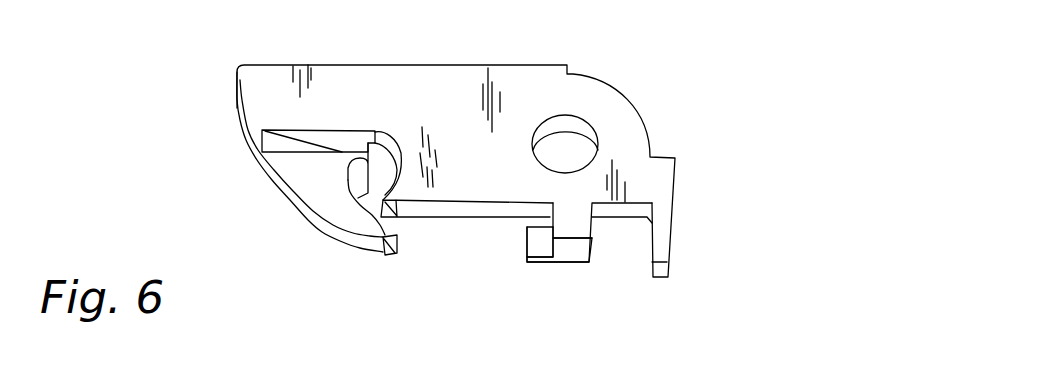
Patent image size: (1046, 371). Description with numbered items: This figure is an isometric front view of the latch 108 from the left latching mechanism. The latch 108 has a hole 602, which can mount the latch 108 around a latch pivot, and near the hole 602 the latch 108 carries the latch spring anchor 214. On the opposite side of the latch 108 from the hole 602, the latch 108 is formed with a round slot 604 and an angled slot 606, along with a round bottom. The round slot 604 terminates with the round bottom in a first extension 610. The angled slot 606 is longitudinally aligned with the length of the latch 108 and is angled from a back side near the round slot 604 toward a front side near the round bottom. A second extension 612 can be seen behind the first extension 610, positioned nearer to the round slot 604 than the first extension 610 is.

The latch 108 is at (655, 47).
The hole 602 is at (601, 130).
The angled slot 606 is at (262, 139).
The round slot 604 is at (357, 180).
The second extension 612 is at (397, 208).
The first extension 610 is at (388, 258).
The latch spring anchor 214 is at (570, 255).